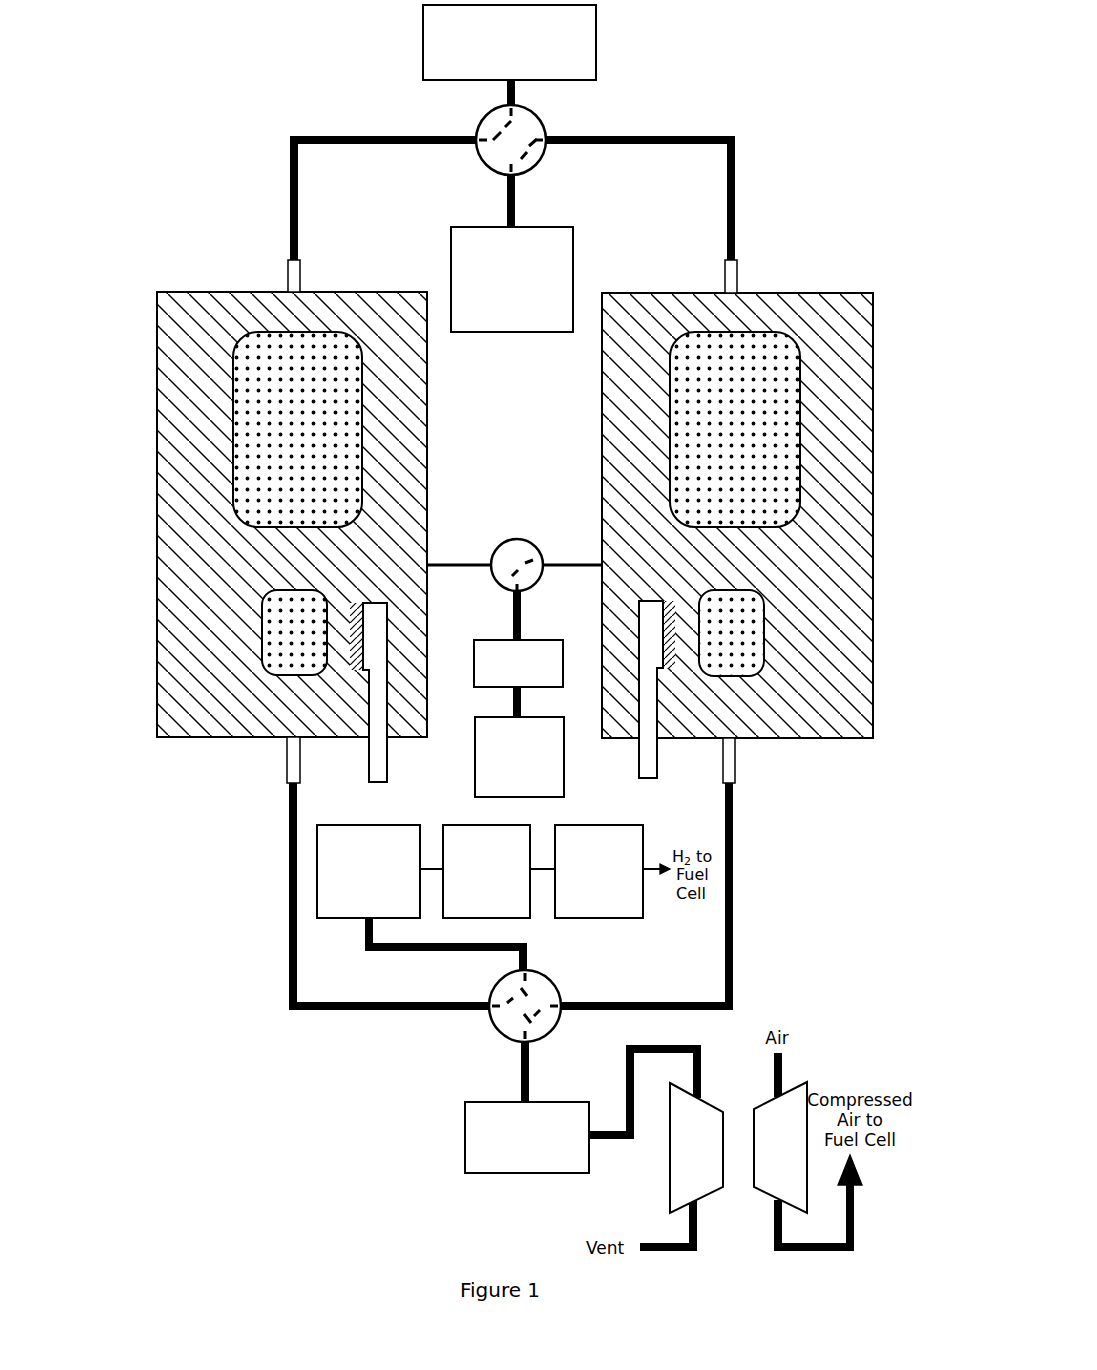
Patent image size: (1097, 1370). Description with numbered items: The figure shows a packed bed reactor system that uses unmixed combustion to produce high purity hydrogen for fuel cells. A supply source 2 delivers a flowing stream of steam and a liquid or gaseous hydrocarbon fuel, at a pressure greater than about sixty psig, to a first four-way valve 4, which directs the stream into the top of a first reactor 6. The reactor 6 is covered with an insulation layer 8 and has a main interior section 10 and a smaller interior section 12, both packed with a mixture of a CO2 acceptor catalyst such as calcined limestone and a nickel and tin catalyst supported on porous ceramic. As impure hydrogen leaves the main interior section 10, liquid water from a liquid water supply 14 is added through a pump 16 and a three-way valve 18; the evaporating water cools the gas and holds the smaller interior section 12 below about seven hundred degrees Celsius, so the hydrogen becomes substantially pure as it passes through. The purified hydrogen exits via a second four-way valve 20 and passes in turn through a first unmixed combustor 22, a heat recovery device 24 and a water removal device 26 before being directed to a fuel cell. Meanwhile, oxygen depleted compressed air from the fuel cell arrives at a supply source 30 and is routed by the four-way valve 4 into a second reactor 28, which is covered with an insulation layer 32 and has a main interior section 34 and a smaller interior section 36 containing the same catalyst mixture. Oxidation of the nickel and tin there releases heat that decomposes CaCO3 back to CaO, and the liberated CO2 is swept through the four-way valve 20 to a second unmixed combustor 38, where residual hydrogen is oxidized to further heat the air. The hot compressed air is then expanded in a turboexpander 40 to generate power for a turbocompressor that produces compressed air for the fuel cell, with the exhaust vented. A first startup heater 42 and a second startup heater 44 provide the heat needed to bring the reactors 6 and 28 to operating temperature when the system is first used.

The supply source 2 is at (469, 238).
The first four-way valve 4 is at (537, 160).
The first reactor 6 is at (729, 280).
The insulation layer 8 is at (602, 388).
The main interior section 10 is at (735, 429).
The smaller interior section 12 is at (731, 633).
The liquid water supply 14 is at (556, 777).
The pump 16 is at (500, 650).
The three-way valve 18 is at (520, 553).
The second four-way valve 20 is at (510, 1025).
The first unmixed combustor 22 is at (353, 908).
The heat recovery device 24 is at (504, 908).
The water removal device 26 is at (618, 908).
The second reactor 28 is at (298, 275).
The supply source 30 is at (596, 17).
The insulation layer 32 is at (428, 392).
The main interior section 34 is at (297, 429).
The smaller interior section 36 is at (294, 632).
The second unmixed combustor 38 is at (471, 1133).
The turboexpander 40 is at (677, 1168).
The first startup heater 42 is at (650, 780).
The second startup heater 44 is at (380, 765).